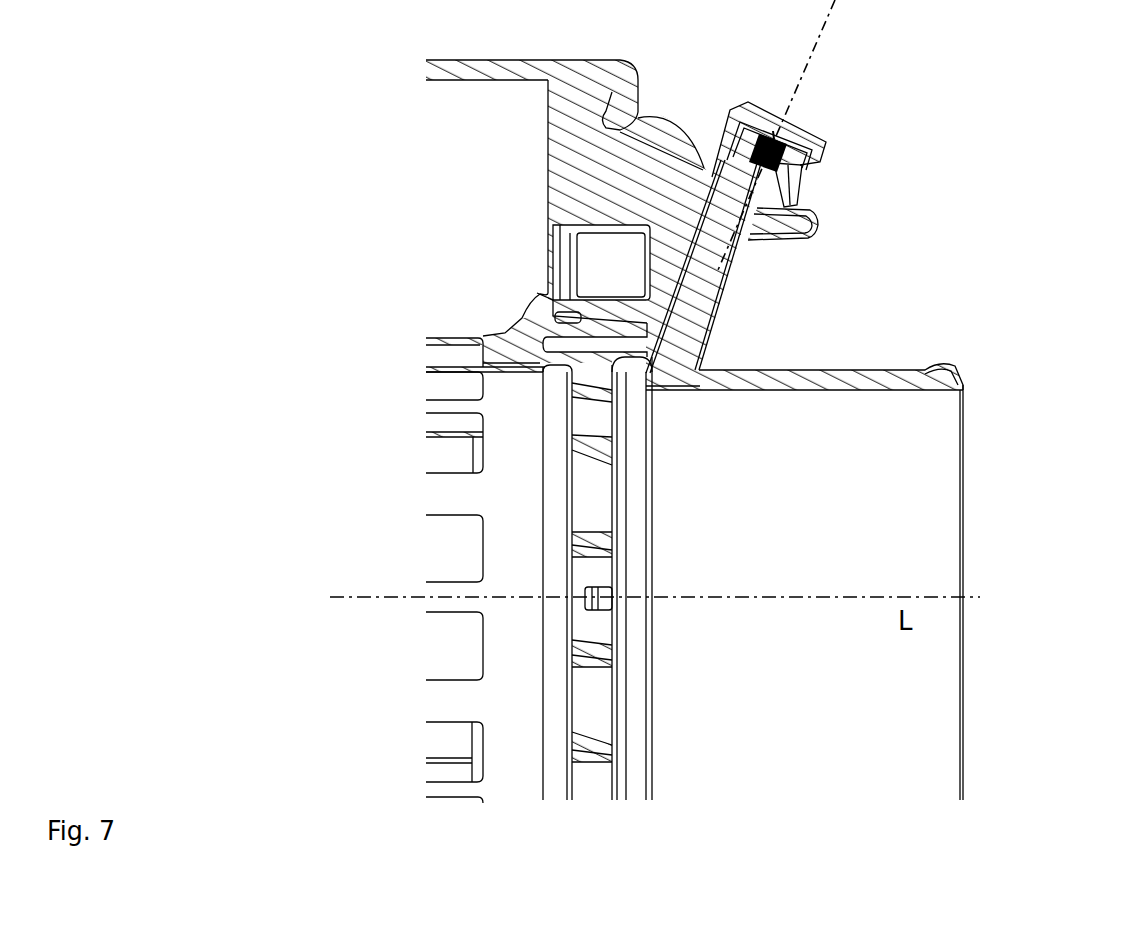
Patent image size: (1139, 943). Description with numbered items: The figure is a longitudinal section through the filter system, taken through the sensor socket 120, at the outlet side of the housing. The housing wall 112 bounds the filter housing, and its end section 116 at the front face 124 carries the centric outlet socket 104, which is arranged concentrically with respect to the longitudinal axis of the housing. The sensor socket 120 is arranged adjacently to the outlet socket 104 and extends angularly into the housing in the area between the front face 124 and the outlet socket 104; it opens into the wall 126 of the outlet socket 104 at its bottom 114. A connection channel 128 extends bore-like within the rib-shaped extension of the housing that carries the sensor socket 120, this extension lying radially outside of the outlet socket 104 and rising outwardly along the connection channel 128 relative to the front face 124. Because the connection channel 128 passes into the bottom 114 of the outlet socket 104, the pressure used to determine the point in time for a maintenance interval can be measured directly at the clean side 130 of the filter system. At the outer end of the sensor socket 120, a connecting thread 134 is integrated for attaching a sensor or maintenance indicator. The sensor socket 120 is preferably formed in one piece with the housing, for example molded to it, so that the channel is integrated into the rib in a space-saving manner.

The outlet socket 104 is at (970, 645).
The housing wall 112 is at (495, 82).
The bottom of the outlet socket 114 is at (707, 362).
The end section of housing 116 is at (847, 186).
The sensor socket 120 is at (740, 263).
The front face of housing 124 is at (584, 628).
The wall of the outlet socket 126 is at (852, 388).
The connection channel 128 is at (745, 212).
The clean side 130 is at (720, 471).
The connecting thread 134 is at (830, 148).